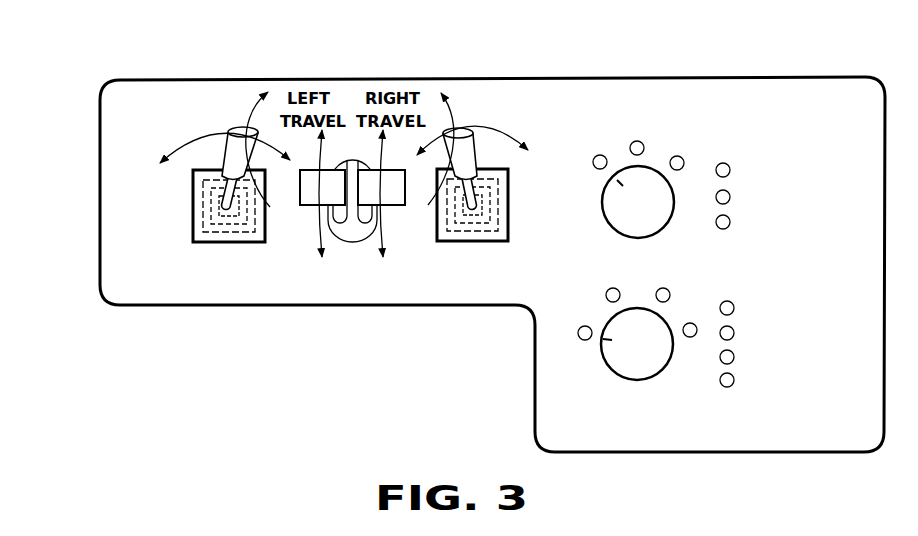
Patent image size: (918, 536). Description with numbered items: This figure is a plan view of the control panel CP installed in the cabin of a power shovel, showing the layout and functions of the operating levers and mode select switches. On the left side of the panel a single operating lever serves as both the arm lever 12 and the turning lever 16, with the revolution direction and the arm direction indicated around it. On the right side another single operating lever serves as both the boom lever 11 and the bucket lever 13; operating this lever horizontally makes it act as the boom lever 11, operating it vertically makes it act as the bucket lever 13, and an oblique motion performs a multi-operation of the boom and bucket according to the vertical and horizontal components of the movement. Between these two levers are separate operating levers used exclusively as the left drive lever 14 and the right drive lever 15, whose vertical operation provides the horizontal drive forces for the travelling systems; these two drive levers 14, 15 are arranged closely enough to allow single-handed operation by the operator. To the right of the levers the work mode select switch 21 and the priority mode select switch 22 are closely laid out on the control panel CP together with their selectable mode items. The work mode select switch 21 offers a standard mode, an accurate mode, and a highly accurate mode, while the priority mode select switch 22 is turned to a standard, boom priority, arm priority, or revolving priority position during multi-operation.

The control panel CP is at (628, 76).
The boom lever 11 is at (482, 141).
The bucket lever 13 is at (471, 137).
The arm lever 12 is at (166, 151).
The turning lever 16 is at (222, 152).
The left drive lever 14 is at (300, 207).
The right drive lever 15 is at (403, 207).
The work mode select switch 21 is at (608, 219).
The priority mode select switch 22 is at (603, 352).